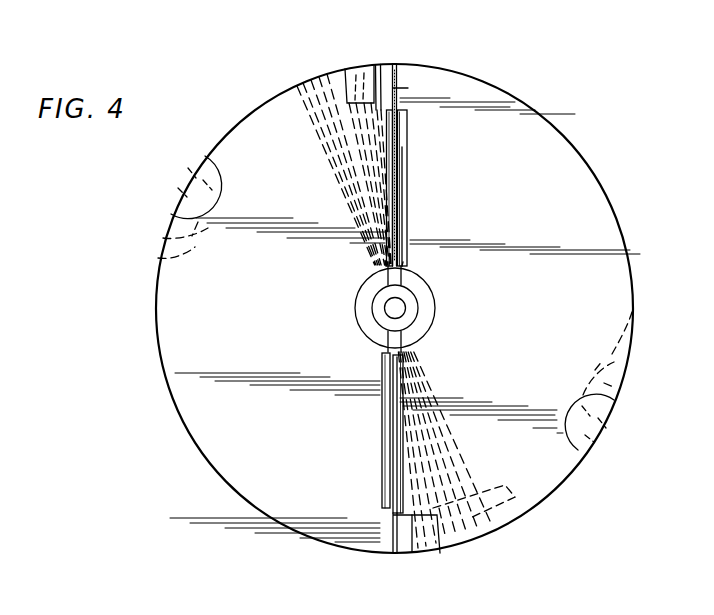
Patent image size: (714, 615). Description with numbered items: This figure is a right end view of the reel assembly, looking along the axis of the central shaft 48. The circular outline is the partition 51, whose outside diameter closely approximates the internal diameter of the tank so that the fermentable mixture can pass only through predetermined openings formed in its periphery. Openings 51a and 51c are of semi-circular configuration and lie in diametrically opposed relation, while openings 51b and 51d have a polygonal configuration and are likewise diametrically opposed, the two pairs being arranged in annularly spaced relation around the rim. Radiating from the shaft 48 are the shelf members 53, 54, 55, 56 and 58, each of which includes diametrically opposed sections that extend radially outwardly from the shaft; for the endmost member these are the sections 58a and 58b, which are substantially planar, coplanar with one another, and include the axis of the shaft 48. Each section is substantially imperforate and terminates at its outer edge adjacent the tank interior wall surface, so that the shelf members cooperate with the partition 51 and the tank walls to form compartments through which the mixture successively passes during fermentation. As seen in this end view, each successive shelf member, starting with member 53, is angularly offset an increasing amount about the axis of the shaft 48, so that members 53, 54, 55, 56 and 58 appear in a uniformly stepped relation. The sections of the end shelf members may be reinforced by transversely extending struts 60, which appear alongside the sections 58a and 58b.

The shaft 48 is at (436, 304).
The partition 51 is at (578, 170).
The opening 51a is at (212, 160).
The opening 51b is at (362, 68).
The opening 51c is at (590, 448).
The opening 51d is at (437, 536).
The shelf member 53 is at (292, 112).
The shelf member 54 is at (310, 86).
The shelf member 55 is at (330, 72).
The shelf member 56 is at (370, 57).
The shelf member 58 is at (398, 78).
The shelf member section 58a is at (390, 532).
The shelf member section 58b is at (397, 90).
The strut 60 is at (408, 133).